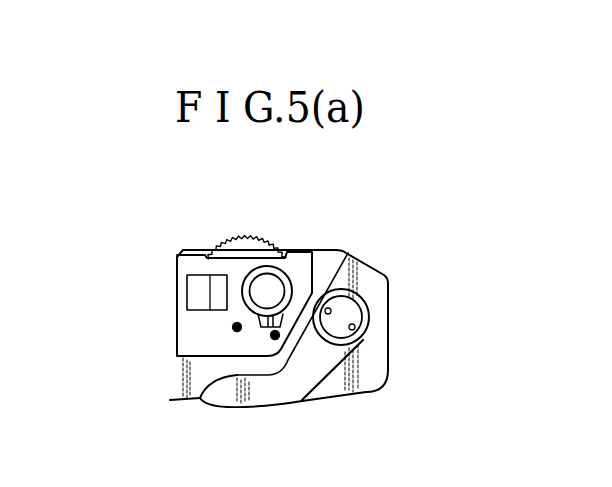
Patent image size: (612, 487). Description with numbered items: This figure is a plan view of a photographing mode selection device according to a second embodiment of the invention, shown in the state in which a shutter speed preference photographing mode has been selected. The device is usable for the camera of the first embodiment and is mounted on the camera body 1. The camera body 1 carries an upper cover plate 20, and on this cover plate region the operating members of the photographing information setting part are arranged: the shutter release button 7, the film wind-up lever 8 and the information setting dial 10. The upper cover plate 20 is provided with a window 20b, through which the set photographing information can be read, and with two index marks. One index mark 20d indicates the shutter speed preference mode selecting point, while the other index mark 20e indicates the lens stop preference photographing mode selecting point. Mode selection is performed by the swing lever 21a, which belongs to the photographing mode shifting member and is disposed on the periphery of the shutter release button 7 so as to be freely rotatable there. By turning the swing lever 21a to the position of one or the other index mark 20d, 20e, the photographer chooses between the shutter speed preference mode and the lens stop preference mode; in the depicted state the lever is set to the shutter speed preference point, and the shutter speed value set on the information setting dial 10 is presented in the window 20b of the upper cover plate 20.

The camera body 1 is at (382, 290).
The shutter release button 7 is at (273, 288).
The film wind-up lever 8 is at (295, 388).
The information setting dial 10 is at (247, 245).
The upper cover plate 20 is at (193, 262).
The window 20b is at (217, 305).
The index mark 20d is at (271, 337).
The index mark 20e is at (233, 329).
The swing lever 21a is at (347, 255).